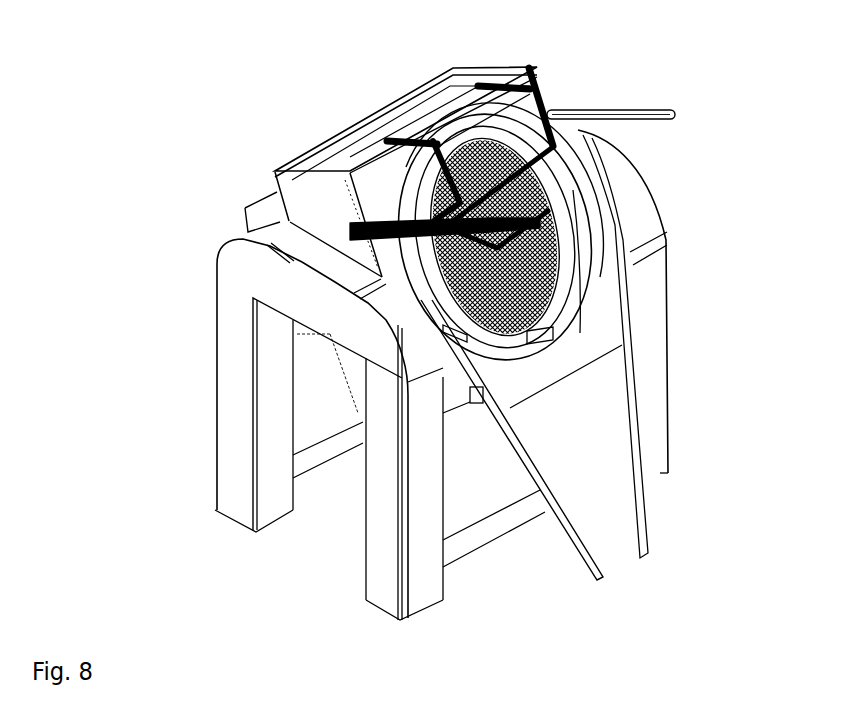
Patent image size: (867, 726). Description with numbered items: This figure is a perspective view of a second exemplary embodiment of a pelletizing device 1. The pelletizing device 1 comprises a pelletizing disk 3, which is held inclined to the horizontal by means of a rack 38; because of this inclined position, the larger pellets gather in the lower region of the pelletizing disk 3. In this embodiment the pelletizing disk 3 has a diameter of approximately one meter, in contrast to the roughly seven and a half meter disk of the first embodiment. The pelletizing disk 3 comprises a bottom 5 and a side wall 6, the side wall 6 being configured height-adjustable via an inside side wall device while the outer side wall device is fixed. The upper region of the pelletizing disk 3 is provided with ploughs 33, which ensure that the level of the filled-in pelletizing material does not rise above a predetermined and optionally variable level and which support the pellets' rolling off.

The pelletizing device 1 is at (154, 143).
The pelletizing disk 3 is at (410, 165).
The bottom 5 is at (543, 240).
The side wall 6 is at (575, 283).
The ploughs 33 is at (567, 182).
The rack 38 is at (230, 485).